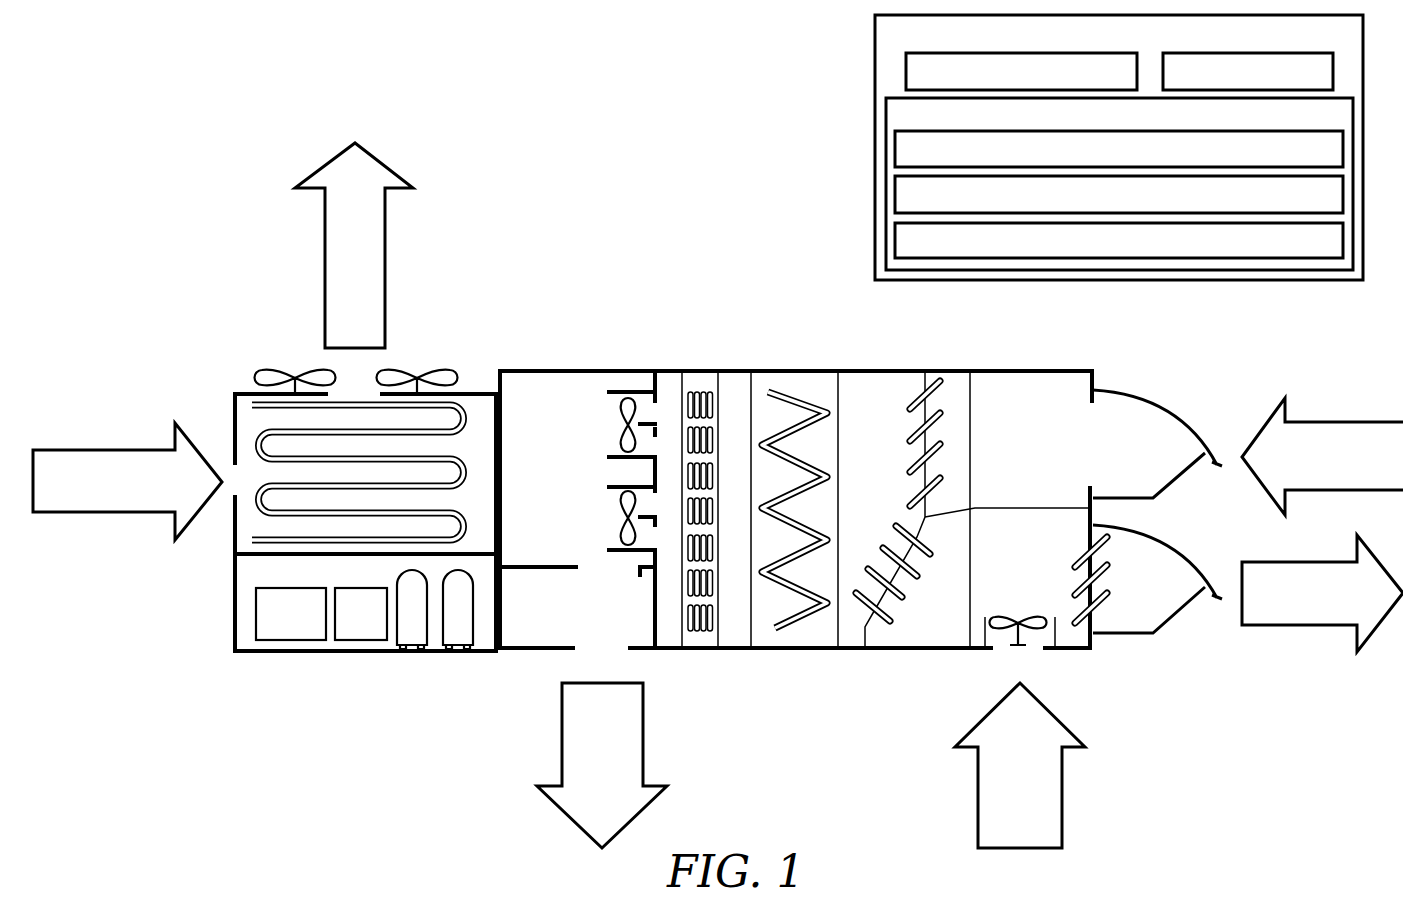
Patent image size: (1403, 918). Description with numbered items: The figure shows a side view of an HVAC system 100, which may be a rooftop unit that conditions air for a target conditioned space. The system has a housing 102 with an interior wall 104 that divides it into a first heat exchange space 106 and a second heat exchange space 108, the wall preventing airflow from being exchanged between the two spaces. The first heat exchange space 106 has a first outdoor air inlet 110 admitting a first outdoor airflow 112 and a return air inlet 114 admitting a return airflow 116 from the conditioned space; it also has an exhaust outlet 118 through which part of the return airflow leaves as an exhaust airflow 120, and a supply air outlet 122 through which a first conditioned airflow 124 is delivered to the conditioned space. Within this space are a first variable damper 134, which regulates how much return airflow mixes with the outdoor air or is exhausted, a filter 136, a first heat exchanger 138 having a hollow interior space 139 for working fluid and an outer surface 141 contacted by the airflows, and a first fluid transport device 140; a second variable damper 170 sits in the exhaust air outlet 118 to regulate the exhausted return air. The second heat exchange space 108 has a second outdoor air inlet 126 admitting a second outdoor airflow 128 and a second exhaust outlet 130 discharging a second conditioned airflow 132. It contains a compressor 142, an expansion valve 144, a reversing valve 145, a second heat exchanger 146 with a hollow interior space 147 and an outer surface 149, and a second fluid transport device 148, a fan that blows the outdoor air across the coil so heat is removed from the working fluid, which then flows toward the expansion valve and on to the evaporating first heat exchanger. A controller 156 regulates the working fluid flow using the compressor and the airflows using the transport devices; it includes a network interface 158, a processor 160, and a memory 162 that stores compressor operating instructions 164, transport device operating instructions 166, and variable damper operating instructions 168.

The HVAC system 100 is at (235, 214).
The housing 102 is at (1010, 372).
The interior wall 104 is at (500, 527).
The first heat exchange space 106 is at (578, 395).
The second heat exchange space 108 is at (238, 548).
The first outdoor air inlet 110 is at (1093, 425).
The first outdoor airflow 112 is at (1322, 456).
The return air inlet 114 is at (1002, 657).
The return airflow 116 is at (978, 787).
The exhaust outlet 118 is at (1130, 606).
The exhaust airflow 120 is at (1322, 593).
The supply air outlet 122 is at (575, 660).
The first conditioned airflow 124 is at (645, 807).
The second outdoor air inlet 126 is at (221, 499).
The second outdoor airflow 128 is at (127, 481).
The second exhaust outlet 130 is at (362, 390).
The second conditioned airflow 132 is at (325, 237).
The first variable damper 134 is at (931, 383).
The filter 136 is at (793, 383).
The first heat exchanger 138 is at (698, 567).
The hollow interior space 139 is at (686, 622).
The first fluid transport device 140 is at (626, 397).
The outer surface 141 is at (713, 621).
The compressor 142 is at (458, 635).
The expansion valve 144 is at (288, 632).
The reversing valve 145 is at (363, 625).
The second heat exchanger 146 is at (306, 452).
The hollow interior space 147 is at (454, 451).
The second fluid transport device 148 is at (268, 380).
The outer surface 149 is at (465, 492).
The controller 156 is at (1119, 147).
The network interface 158 is at (1021, 71).
The processor 160 is at (1248, 71).
The memory 162 is at (1119, 184).
The compressor operating instructions 164 is at (1119, 149).
The transport device operating instructions 166 is at (1119, 194).
The variable damper operating instructions 168 is at (1119, 240).
The second variable damper 170 is at (1082, 622).